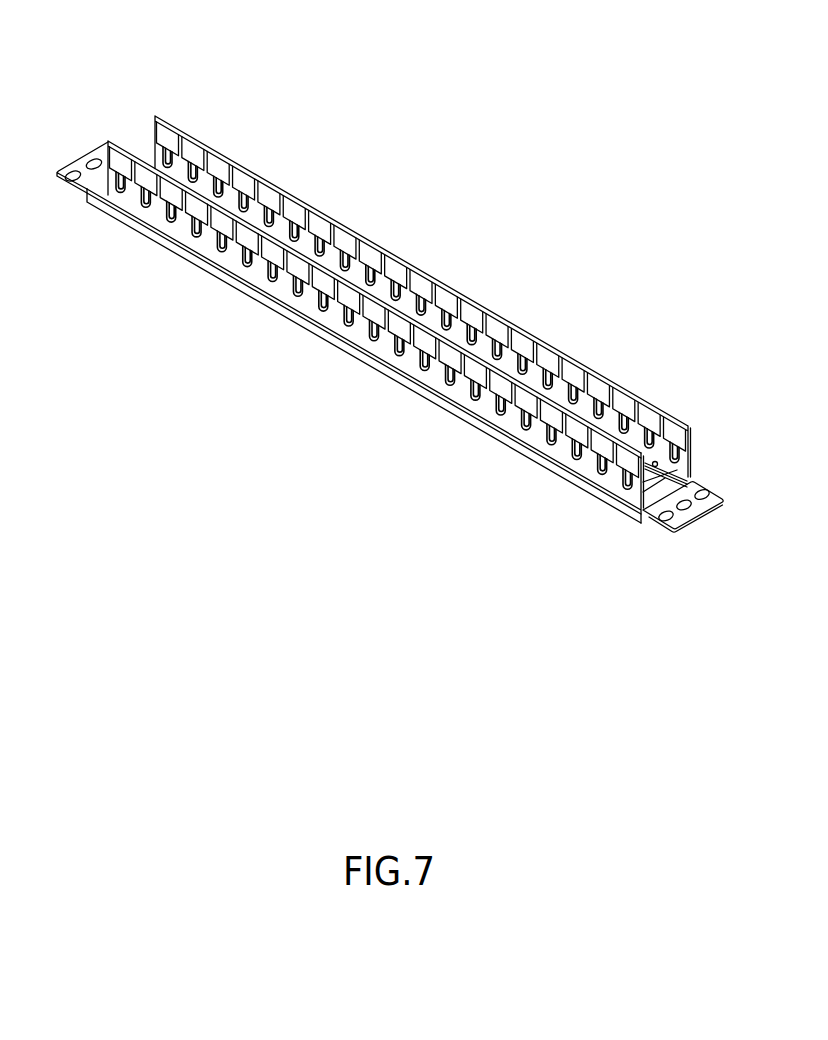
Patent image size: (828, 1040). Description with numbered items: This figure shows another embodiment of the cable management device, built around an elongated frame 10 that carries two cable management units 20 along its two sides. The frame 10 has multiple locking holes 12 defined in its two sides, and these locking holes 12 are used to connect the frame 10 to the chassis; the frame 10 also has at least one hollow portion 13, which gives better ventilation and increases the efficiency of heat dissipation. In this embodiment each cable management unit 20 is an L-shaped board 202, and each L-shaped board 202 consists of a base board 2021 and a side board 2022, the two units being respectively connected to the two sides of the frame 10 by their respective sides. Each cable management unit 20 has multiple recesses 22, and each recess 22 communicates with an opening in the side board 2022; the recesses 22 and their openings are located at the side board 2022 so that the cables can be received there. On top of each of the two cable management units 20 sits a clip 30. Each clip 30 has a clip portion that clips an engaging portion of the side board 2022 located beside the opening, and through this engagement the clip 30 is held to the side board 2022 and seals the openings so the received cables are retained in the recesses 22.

The frame 10 is at (646, 515).
The locking holes 12 is at (685, 507).
The hollow portion 13 is at (665, 490).
The cable management unit 20 is at (132, 129).
The recesses 22 is at (270, 267).
The clip 30 is at (297, 198).
The L-shaped board 202 is at (355, 333).
The base board 2021 is at (673, 476).
The side board 2022 is at (457, 395).